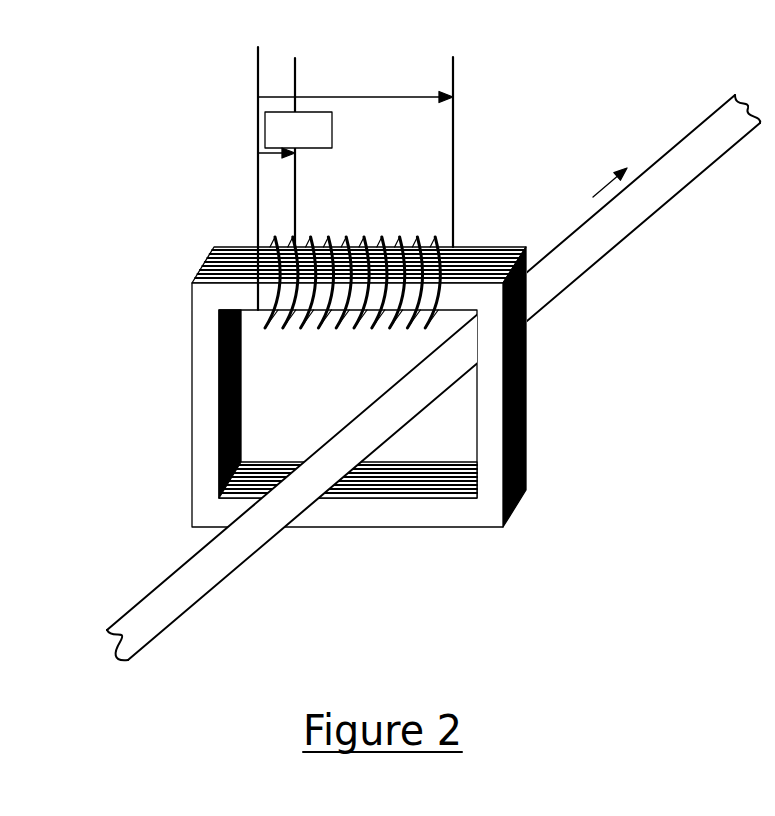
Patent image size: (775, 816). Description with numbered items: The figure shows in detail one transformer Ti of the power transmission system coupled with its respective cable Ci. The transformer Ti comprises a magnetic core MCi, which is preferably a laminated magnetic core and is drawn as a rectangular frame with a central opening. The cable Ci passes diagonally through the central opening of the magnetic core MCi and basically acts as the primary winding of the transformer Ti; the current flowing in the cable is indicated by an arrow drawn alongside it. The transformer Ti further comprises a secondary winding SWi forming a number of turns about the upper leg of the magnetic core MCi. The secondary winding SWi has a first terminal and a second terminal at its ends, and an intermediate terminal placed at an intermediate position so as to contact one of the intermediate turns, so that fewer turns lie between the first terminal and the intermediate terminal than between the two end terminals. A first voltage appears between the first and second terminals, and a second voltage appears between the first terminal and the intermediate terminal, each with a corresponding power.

The transformer Ti is at (431, 417).
The magnetic core MCi is at (455, 527).
The secondary winding SWi is at (314, 342).
The cable Ci is at (138, 600).
The current in conductor Ii is at (600, 189).